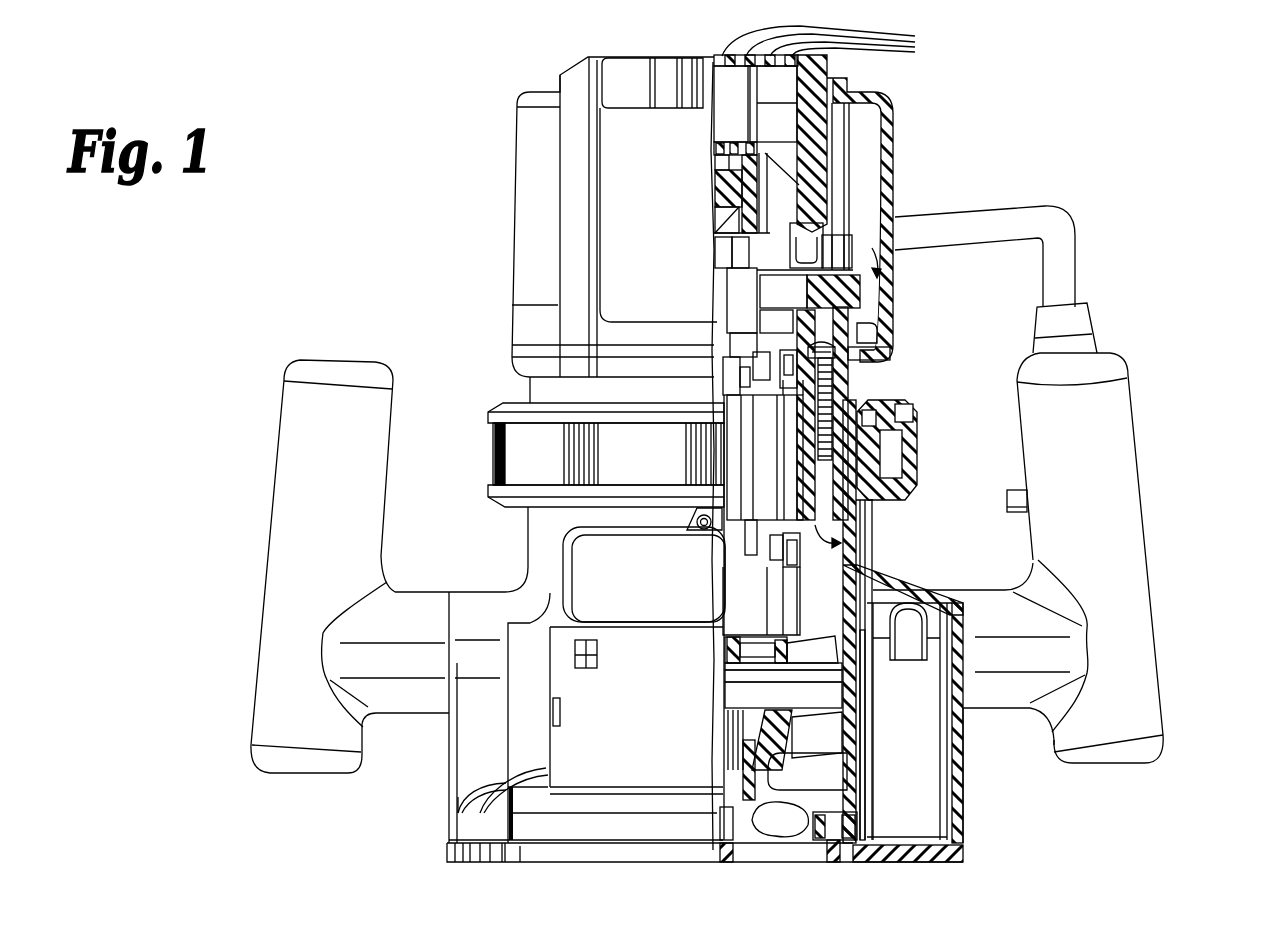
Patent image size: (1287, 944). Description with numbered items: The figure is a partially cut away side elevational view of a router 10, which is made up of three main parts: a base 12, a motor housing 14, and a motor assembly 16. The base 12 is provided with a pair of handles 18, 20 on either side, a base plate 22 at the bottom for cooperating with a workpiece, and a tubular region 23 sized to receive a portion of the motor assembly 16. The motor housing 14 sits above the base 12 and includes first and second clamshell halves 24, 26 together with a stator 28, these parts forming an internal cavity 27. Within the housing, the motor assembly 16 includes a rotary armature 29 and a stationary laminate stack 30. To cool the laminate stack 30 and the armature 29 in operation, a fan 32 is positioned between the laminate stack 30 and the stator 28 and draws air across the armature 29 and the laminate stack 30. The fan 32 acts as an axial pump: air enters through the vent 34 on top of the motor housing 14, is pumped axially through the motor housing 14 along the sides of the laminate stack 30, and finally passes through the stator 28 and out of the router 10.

The router 10 is at (390, 300).
The base 12 is at (449, 834).
The motor housing 14 is at (516, 200).
The motor assembly 16 is at (878, 540).
The handle 18 is at (276, 445).
The handle 20 is at (1141, 445).
The base plate 22 is at (950, 862).
The tubular region 23 is at (865, 570).
The first clamshell half 24 is at (893, 123).
The second clamshell half 26 is at (899, 347).
The internal cavity 27 is at (870, 290).
The stator 28 is at (833, 693).
The rotary armature 29 is at (755, 267).
The stationary laminate stack 30 is at (793, 402).
The fan 32 is at (833, 640).
The vent 34 is at (830, 46).